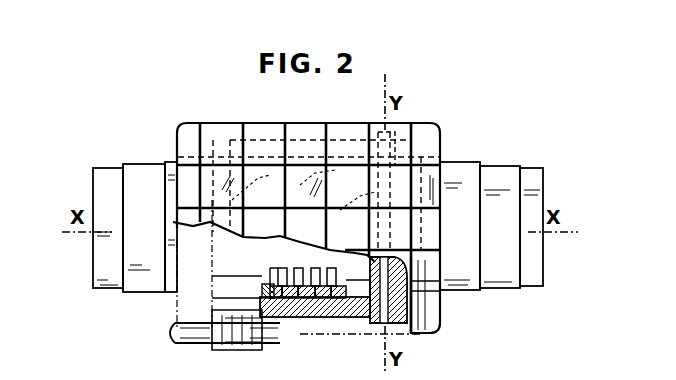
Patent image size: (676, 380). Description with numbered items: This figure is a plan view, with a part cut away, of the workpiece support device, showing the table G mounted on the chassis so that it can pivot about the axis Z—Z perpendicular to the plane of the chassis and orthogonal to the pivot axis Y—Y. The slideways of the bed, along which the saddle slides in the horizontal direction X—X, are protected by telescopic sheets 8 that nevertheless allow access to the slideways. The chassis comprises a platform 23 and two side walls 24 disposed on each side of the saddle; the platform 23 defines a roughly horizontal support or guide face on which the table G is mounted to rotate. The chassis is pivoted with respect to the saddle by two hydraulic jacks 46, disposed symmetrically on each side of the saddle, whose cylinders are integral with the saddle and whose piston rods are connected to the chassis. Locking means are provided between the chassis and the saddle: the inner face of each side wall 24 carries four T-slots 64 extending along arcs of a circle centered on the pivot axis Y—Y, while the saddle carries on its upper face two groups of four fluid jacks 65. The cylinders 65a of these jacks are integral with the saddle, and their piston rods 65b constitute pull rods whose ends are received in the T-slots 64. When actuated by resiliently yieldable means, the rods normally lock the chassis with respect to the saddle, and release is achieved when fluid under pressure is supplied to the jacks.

The table G is at (320, 112).
The telescopic sheets 8 is at (141, 186).
The platform 23 is at (405, 283).
The side walls 24 is at (325, 320).
The hydraulic jacks 46 is at (198, 335).
The T-slots 64 is at (263, 299).
The fluid jacks 65 is at (331, 265).
The cylinders 65a is at (276, 280).
The piston rods 65b is at (345, 320).